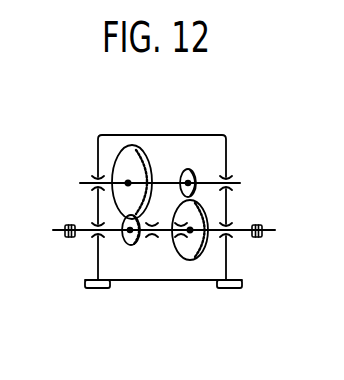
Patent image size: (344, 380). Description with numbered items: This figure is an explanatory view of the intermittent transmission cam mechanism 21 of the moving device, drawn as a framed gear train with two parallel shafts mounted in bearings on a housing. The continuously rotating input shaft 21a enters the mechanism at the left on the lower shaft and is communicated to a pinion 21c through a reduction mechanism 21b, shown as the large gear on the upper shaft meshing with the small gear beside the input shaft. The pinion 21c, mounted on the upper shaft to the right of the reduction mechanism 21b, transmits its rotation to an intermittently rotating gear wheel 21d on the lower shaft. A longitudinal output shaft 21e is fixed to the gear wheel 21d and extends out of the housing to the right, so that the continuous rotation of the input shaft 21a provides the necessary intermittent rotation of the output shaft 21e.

The intermittent transmission cam mechanism 21 is at (98, 155).
The input shaft 21a is at (80, 237).
The reduction mechanism 21b is at (127, 224).
The pinion 21c is at (195, 181).
The intermittently rotating gear wheel 21d is at (196, 258).
The longitudinal output shaft 21e is at (263, 237).